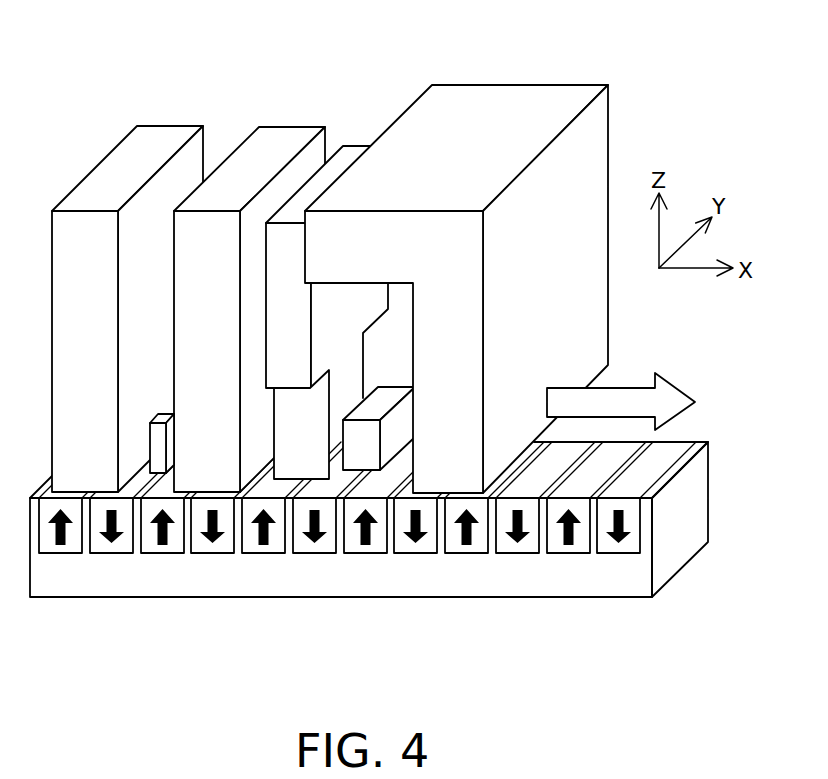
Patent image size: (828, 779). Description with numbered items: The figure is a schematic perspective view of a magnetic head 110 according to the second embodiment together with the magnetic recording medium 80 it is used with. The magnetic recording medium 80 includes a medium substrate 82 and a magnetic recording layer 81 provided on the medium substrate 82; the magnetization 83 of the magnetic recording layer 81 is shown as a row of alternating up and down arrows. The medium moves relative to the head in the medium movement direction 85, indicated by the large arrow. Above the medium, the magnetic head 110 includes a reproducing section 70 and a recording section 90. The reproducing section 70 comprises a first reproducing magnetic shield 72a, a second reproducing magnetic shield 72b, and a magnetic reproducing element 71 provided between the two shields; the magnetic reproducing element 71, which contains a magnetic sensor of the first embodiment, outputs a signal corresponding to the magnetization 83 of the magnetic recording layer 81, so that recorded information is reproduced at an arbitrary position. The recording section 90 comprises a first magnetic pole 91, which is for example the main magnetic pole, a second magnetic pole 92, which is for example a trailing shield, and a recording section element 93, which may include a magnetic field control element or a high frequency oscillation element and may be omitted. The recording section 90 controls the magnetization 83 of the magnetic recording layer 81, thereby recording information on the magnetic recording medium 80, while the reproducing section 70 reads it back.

The reproducing section 70 is at (192, 259).
The magnetic reproducing element 71 is at (155, 407).
The first reproducing magnetic shield 72a is at (153, 143).
The second reproducing magnetic shield 72b is at (278, 143).
The magnetic recording medium 80 is at (369, 571).
The magnetic recording layer 81 is at (58, 556).
The medium substrate 82 is at (102, 574).
The magnetization 83 is at (160, 543).
The medium movement direction 85 is at (630, 395).
The recording section 90 is at (430, 401).
The first magnetic pole 91 is at (305, 463).
The second magnetic pole 92 is at (455, 468).
The recording section element 93 is at (362, 447).
The magnetic head 110 is at (377, 371).